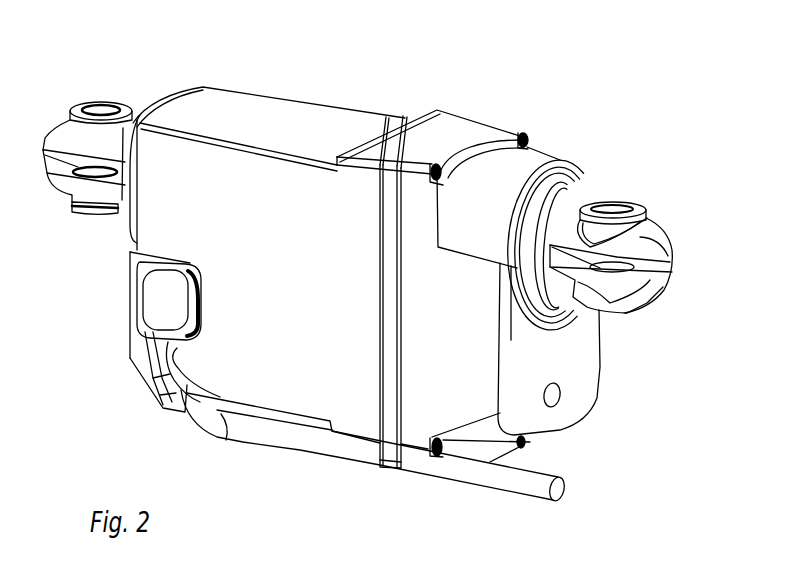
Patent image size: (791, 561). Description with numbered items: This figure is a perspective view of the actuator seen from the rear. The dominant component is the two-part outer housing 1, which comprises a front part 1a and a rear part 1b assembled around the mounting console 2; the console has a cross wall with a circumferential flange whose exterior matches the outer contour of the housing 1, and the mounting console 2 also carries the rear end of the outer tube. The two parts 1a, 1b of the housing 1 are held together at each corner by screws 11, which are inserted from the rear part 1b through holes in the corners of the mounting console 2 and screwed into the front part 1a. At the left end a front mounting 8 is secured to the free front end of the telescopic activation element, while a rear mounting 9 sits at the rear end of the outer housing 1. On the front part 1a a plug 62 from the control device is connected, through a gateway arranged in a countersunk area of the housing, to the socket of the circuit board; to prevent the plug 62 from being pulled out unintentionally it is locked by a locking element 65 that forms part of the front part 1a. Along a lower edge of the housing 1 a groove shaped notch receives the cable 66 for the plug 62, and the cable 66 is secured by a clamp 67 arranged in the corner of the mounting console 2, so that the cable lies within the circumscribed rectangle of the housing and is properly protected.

The outer housing 1 is at (281, 122).
The front part 1a is at (175, 230).
The rear part 1b is at (540, 412).
The mounting console 2 is at (461, 127).
The front mounting 8 is at (63, 107).
The rear mounting 9 is at (657, 208).
The screws 11 is at (527, 133).
The plug 62 is at (163, 298).
The locking element 65 is at (145, 368).
The cable 66 is at (278, 437).
The clamp 67 is at (398, 460).